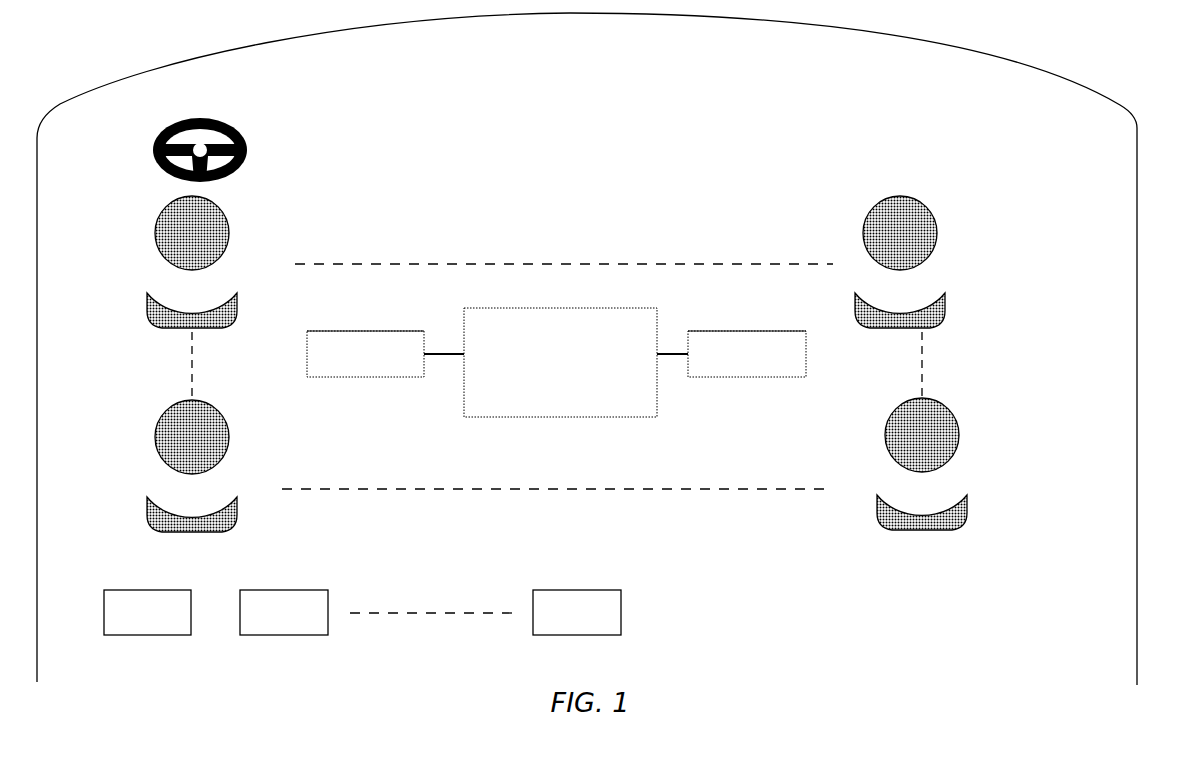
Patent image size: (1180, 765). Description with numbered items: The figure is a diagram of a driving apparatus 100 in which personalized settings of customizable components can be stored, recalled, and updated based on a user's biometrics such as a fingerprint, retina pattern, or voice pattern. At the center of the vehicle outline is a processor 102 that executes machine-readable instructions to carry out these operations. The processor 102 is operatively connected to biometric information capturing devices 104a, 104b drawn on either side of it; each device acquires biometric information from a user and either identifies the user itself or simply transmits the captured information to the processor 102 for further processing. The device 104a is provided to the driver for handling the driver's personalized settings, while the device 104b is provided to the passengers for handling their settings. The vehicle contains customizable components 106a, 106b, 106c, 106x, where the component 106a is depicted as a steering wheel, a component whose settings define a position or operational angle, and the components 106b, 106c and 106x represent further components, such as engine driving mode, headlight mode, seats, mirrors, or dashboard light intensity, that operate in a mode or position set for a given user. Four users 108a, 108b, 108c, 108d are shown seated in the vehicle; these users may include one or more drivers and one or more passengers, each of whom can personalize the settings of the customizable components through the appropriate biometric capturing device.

The driving apparatus 100 is at (870, 611).
The processor 102 is at (560, 362).
The biometric information capturing device 104a is at (385, 354).
The biometric information capturing device 104b is at (731, 354).
The customizable component 106a is at (242, 145).
The customizable component 106b is at (147, 612).
The customizable component 106c is at (284, 612).
The customizable component 106x is at (577, 612).
The user 108a is at (224, 212).
The user 108b is at (920, 207).
The user 108c is at (223, 415).
The user 108d is at (950, 418).